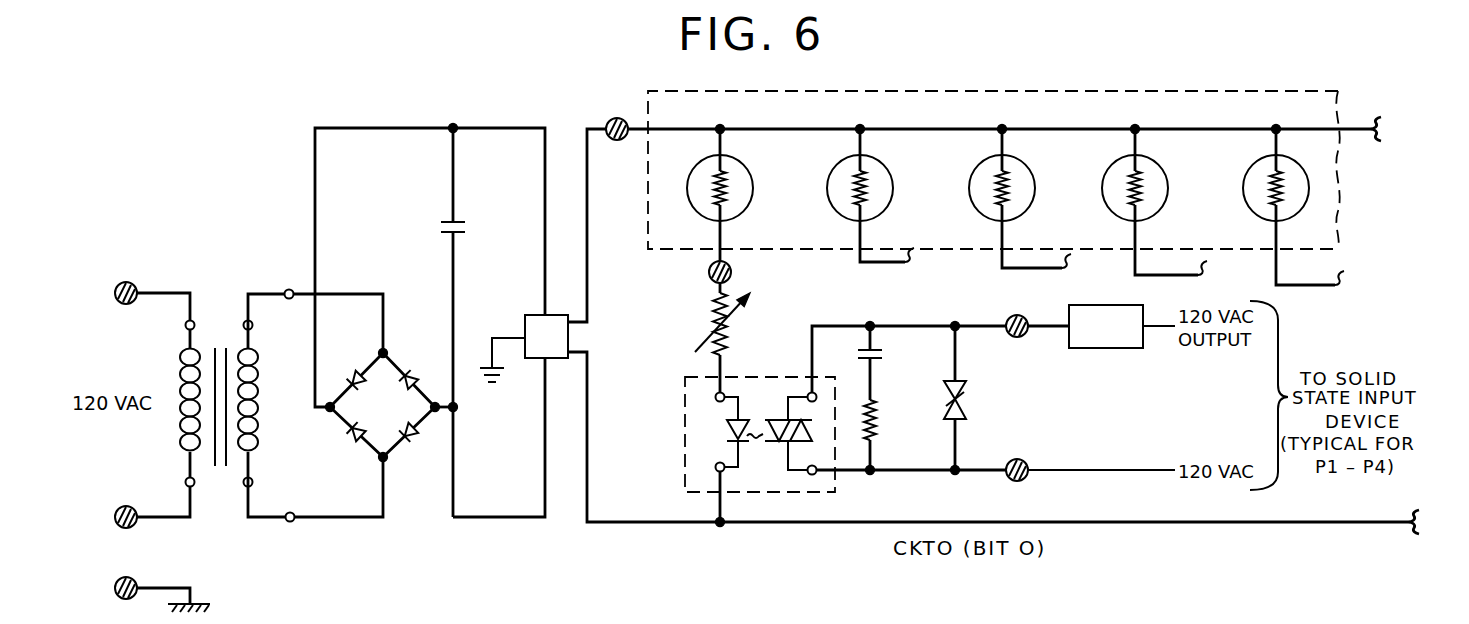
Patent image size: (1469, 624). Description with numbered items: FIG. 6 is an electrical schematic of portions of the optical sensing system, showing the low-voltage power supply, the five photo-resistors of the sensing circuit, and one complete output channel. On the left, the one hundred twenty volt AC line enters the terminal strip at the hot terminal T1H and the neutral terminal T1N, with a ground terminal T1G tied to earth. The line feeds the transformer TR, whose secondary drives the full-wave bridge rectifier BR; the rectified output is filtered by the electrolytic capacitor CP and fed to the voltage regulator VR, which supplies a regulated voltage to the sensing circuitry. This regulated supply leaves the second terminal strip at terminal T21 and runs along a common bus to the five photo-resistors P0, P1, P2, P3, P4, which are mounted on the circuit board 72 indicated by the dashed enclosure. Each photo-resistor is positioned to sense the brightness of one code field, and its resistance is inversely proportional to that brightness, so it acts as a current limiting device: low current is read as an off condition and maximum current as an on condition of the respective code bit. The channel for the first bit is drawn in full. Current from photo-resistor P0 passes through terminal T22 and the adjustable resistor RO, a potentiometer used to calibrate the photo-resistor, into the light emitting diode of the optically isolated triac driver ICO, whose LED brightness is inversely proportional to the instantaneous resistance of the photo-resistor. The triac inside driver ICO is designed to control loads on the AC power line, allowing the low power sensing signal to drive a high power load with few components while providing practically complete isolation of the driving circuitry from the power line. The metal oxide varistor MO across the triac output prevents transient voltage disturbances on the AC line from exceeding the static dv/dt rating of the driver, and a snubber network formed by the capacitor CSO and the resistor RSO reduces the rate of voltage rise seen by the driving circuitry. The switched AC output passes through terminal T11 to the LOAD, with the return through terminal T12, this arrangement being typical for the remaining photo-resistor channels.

The circuit board 72 is at (1137, 91).
The terminal strip T1 hot terminal T1H is at (93, 293).
The terminal strip T1 neutral terminal T1N is at (93, 517).
The terminal strip T1 ground terminal T1G is at (129, 594).
The transformer TR is at (237, 406).
The full-wave bridge rectifier BR is at (383, 405).
The electrolytic capacitor CP is at (470, 322).
The voltage regulator VR is at (546, 336).
The terminal strip T2 first terminal T21 is at (617, 117).
The terminal strip T2 second terminal T22 is at (749, 272).
The photo-resistor P0 is at (747, 207).
The photo-resistor P1 is at (893, 188).
The photo-resistor P2 is at (1035, 188).
The photo-resistor P3 is at (1168, 188).
The photo-resistor P4 is at (1309, 183).
The adjustable resistor RO is at (732, 338).
The optically isolated triac driver ICO is at (794, 374).
The snubber capacitor CSO is at (894, 363).
The snubber resistor RSO is at (894, 435).
The metal oxide varistor MO is at (975, 398).
The terminal strip T1 output terminal T11 is at (1028, 312).
The terminal strip T1 return terminal T12 is at (1020, 457).
The load LOAD is at (1106, 326).